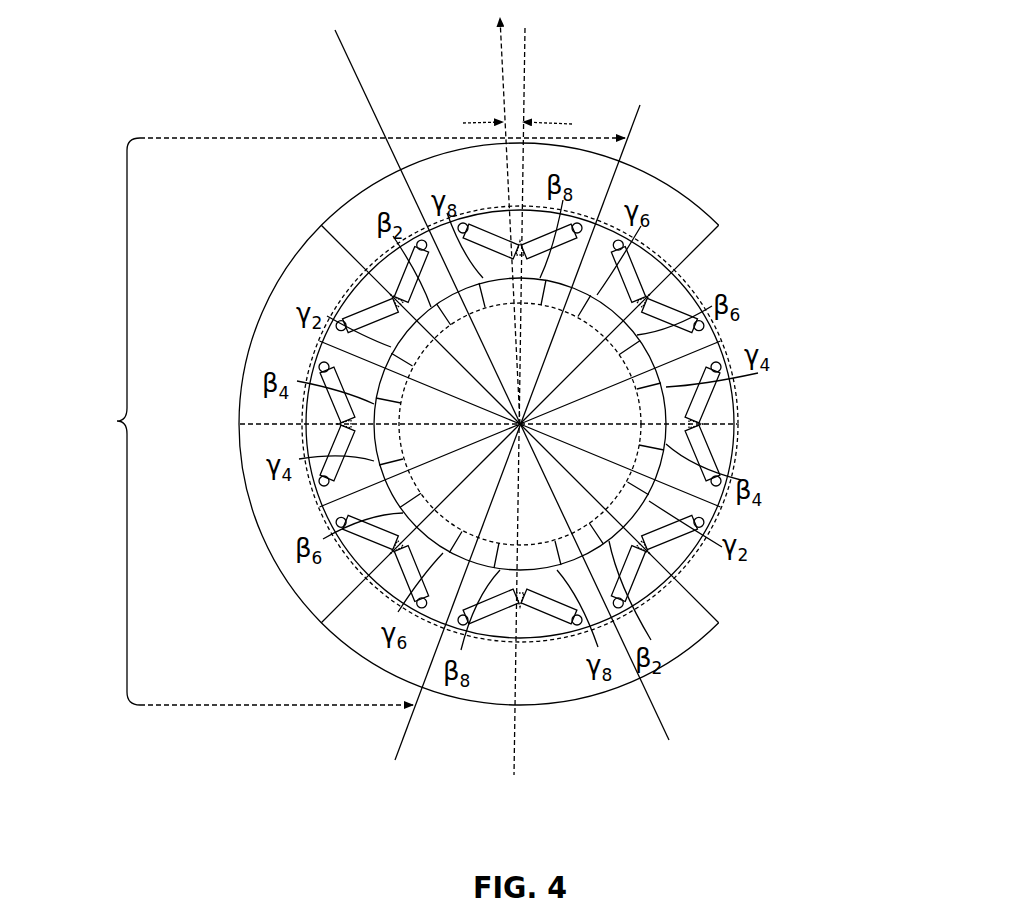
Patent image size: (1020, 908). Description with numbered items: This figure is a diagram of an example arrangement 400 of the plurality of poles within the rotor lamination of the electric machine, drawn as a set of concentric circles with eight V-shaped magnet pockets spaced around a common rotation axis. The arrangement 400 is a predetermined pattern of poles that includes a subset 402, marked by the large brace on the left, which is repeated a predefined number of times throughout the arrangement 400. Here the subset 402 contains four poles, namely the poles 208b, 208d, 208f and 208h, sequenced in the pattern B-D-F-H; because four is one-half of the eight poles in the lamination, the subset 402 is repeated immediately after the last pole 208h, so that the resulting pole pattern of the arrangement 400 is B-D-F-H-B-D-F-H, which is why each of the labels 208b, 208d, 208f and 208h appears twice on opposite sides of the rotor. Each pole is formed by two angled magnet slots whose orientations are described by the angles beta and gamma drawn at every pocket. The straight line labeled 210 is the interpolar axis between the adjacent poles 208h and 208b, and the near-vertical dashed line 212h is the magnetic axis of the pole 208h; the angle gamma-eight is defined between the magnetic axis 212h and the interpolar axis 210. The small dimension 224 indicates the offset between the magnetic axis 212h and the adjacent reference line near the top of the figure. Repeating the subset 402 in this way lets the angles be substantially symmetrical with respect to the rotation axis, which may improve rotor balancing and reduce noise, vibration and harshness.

The arrangement of poles 400 is at (712, 95).
The subset of sequences 402 is at (117, 421).
The pole 208b is at (367, 255).
The pole 208d is at (745, 403).
The pole 208f is at (690, 275).
The pole 208h is at (478, 200).
The interpolar axis 210 is at (366, 98).
The magnetic axis 212h is at (527, 31).
The offset angle 224 is at (546, 121).